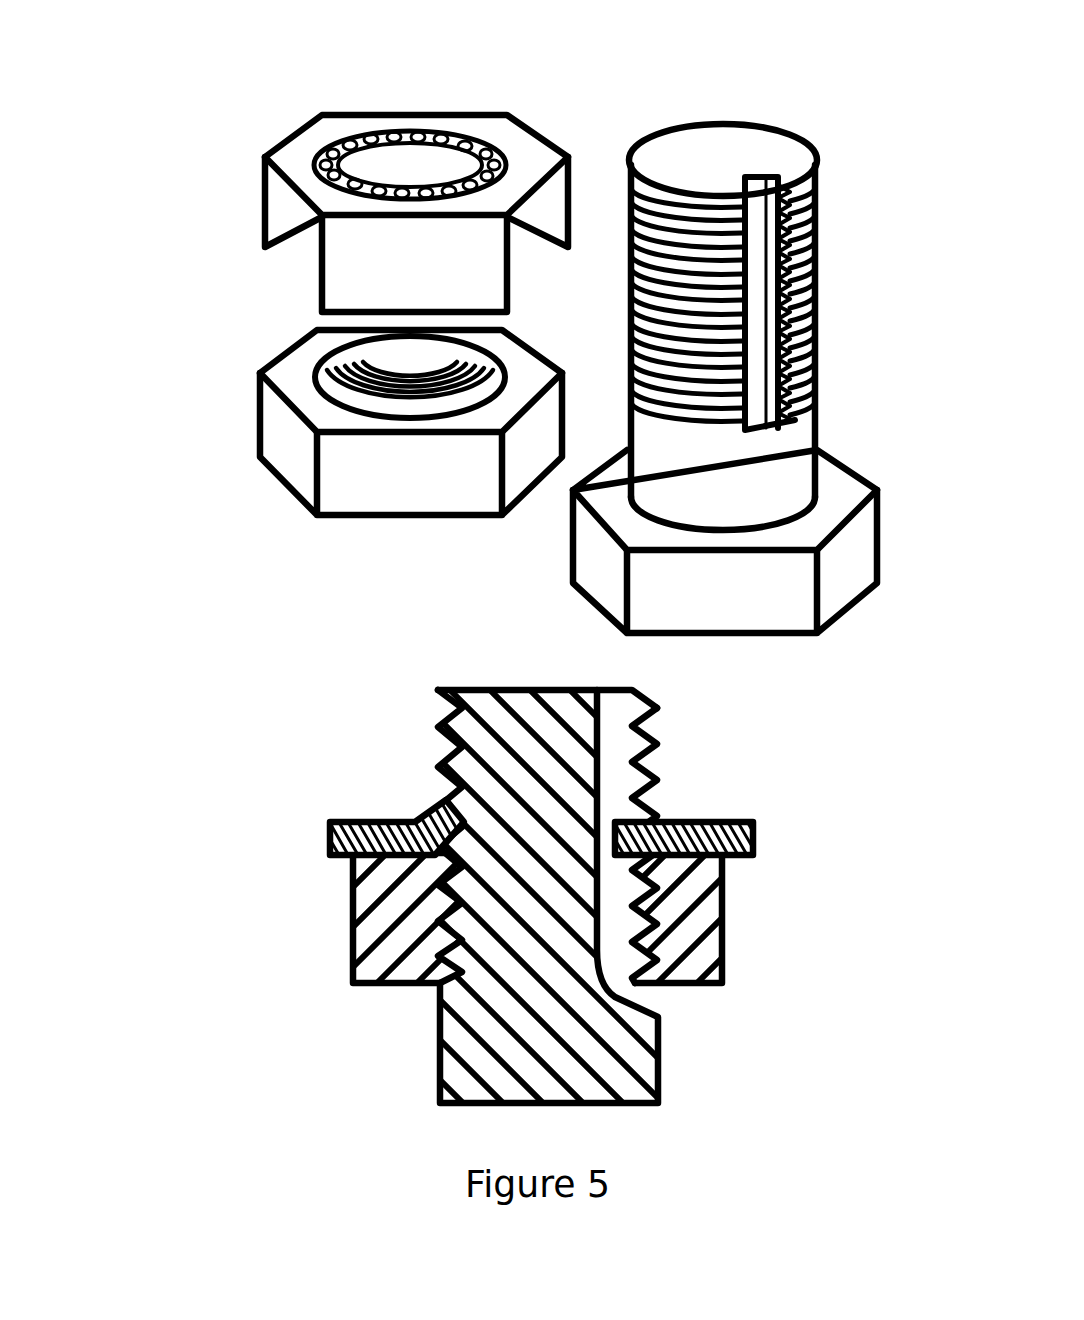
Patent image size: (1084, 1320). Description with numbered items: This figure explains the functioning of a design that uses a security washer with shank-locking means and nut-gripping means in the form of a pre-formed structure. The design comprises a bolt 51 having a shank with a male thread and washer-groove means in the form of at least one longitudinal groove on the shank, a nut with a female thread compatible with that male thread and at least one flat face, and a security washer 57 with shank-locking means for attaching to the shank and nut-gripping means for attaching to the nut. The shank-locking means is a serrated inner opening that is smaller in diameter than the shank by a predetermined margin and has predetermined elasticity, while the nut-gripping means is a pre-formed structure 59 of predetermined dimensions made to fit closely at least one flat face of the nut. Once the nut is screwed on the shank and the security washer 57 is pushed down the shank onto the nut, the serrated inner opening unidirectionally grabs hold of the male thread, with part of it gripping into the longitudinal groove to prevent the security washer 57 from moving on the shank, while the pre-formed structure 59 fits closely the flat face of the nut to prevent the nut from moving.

The bolt 51 is at (703, 583).
The security washer 57 is at (345, 431).
The pre-formed structure 59 is at (463, 265).